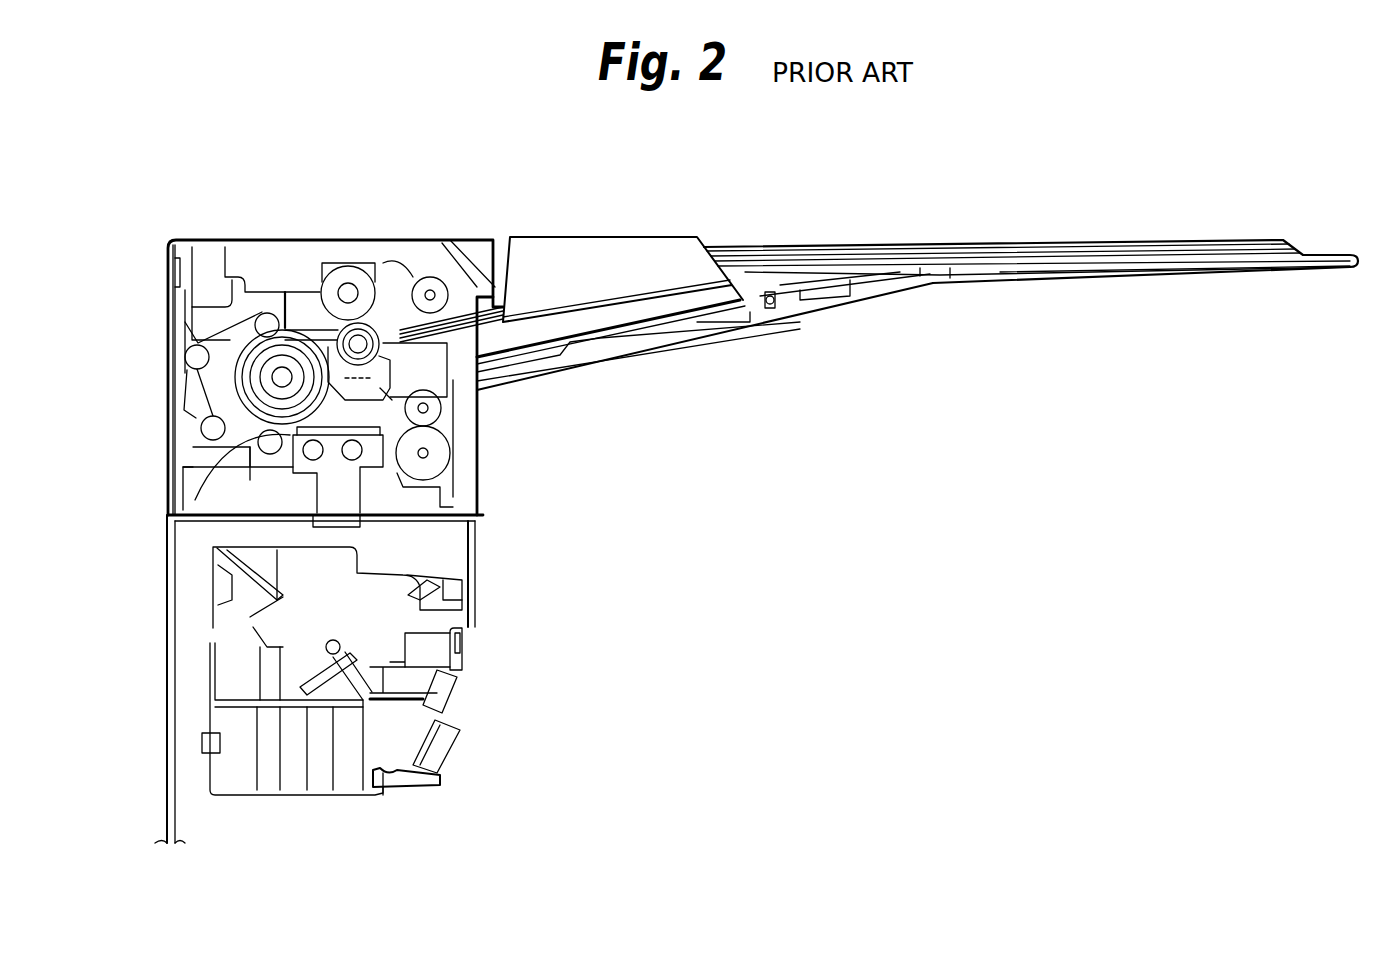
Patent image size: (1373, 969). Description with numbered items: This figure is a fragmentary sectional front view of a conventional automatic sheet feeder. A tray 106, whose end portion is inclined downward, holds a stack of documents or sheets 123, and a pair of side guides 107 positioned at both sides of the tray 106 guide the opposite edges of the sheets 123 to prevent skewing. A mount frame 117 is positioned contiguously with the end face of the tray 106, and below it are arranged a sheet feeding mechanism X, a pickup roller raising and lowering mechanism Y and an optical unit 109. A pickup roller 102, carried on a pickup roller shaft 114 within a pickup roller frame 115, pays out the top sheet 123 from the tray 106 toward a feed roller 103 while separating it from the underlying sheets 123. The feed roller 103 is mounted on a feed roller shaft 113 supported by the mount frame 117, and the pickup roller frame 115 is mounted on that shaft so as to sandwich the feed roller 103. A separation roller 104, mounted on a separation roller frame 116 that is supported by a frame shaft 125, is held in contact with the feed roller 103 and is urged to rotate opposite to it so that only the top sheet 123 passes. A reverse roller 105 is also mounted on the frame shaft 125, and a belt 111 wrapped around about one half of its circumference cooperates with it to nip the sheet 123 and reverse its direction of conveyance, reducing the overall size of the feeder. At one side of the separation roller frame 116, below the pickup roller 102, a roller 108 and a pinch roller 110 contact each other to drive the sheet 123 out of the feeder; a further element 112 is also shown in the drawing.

The sheet feeding mechanism X is at (212, 223).
The pickup roller raising and lowering mechanism Y is at (378, 152).
The pickup roller 102 is at (497, 250).
The feed roller 103 is at (345, 290).
The separation roller 104 is at (332, 280).
The reverse roller 105 is at (280, 385).
The tray 106 is at (813, 247).
The side guides 107 is at (595, 250).
The roller 108 is at (440, 458).
The optical unit 109 is at (462, 648).
The pinch roller 110 is at (440, 415).
The belt 111 is at (198, 322).
The gear 112 is at (185, 362).
The feed roller shaft 113 is at (355, 268).
The pickup roller shaft 114 is at (447, 240).
The pickup roller frame 115 is at (372, 250).
The separation roller frame 116 is at (400, 488).
The mount frame 117 is at (292, 248).
The sheets 123 is at (1020, 273).
The frame shaft 125 is at (250, 400).